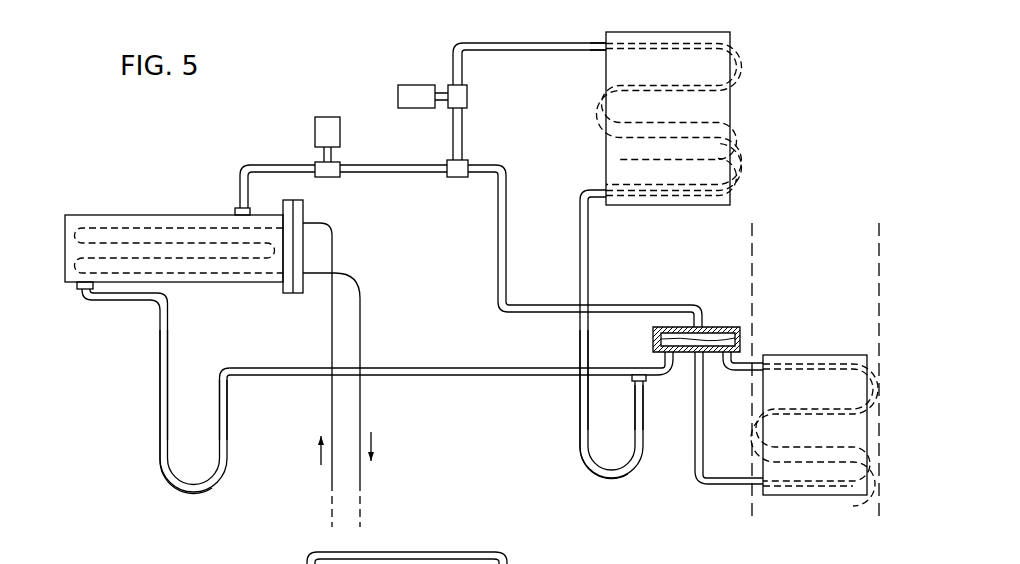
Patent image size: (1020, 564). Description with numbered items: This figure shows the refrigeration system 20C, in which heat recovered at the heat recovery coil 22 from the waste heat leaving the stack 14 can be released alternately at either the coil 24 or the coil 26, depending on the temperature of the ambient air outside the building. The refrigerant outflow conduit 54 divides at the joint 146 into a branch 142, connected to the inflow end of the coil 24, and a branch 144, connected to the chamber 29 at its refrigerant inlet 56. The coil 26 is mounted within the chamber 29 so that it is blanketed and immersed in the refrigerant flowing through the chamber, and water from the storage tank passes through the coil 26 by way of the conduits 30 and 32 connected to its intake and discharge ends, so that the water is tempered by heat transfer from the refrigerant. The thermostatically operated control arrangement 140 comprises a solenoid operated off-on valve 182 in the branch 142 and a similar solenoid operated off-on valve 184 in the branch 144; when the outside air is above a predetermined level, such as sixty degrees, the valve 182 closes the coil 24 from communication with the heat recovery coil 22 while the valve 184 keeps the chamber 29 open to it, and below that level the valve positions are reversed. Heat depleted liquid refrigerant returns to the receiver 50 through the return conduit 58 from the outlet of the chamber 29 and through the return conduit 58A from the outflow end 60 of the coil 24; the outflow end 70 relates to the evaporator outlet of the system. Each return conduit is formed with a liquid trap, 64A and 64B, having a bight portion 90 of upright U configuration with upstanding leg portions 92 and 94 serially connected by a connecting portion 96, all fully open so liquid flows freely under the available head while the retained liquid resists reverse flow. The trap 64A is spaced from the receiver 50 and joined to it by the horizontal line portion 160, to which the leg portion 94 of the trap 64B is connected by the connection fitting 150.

The stack 14 is at (882, 281).
The refrigeration system 20C is at (787, 83).
The heat recovery coil 22 is at (869, 392).
The coil 24 is at (731, 37).
The coil 26 is at (178, 222).
The chamber 29 is at (101, 212).
The conduit 30 is at (362, 303).
The conduit 32 is at (330, 322).
The receiver 50 is at (733, 320).
The refrigerant outflow conduit 54 is at (507, 262).
The refrigerant inlet 56 is at (238, 207).
The return conduit 58 is at (437, 375).
The return conduit 58A is at (589, 275).
The outflow end 60 is at (608, 197).
The liquid trap 64A is at (153, 410).
The liquid trap 64B is at (568, 457).
The outflow end 70 is at (605, 43).
The bight portion 90 is at (160, 466).
The leg portion 92 is at (166, 402).
The leg portion 94 is at (226, 427).
The connecting portion 96 is at (193, 492).
The thermostatically operated control arrangement 140 is at (380, 82).
The conduit branch 142 is at (488, 43).
The conduit branch 144 is at (412, 175).
The joint 146 is at (465, 164).
The connection fitting 150 is at (645, 381).
The horizontal line portion 160 is at (487, 366).
The solenoid operated off-on valve 182 is at (420, 82).
The solenoid operated off-on valve 184 is at (318, 113).